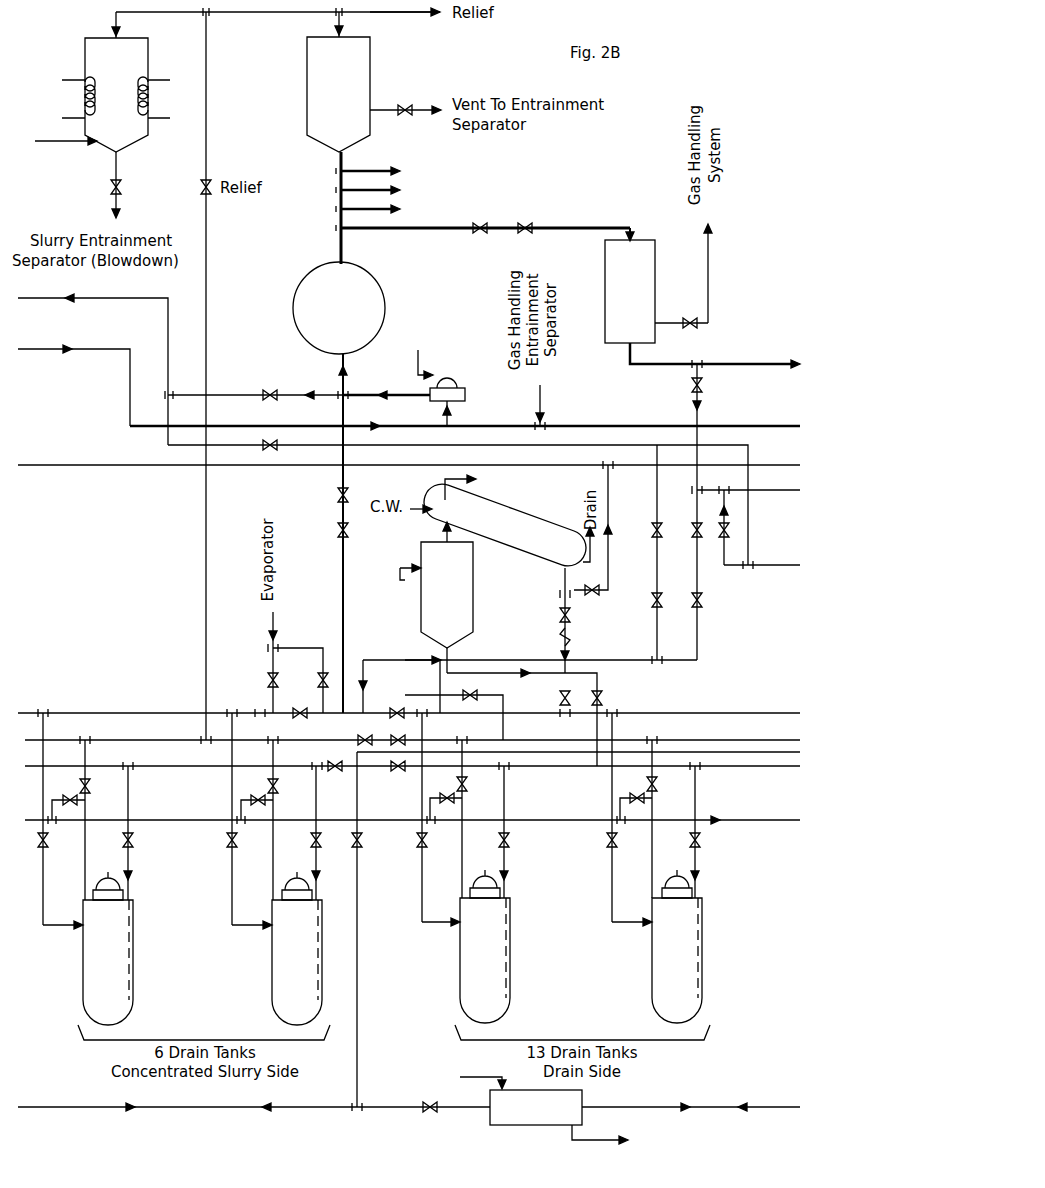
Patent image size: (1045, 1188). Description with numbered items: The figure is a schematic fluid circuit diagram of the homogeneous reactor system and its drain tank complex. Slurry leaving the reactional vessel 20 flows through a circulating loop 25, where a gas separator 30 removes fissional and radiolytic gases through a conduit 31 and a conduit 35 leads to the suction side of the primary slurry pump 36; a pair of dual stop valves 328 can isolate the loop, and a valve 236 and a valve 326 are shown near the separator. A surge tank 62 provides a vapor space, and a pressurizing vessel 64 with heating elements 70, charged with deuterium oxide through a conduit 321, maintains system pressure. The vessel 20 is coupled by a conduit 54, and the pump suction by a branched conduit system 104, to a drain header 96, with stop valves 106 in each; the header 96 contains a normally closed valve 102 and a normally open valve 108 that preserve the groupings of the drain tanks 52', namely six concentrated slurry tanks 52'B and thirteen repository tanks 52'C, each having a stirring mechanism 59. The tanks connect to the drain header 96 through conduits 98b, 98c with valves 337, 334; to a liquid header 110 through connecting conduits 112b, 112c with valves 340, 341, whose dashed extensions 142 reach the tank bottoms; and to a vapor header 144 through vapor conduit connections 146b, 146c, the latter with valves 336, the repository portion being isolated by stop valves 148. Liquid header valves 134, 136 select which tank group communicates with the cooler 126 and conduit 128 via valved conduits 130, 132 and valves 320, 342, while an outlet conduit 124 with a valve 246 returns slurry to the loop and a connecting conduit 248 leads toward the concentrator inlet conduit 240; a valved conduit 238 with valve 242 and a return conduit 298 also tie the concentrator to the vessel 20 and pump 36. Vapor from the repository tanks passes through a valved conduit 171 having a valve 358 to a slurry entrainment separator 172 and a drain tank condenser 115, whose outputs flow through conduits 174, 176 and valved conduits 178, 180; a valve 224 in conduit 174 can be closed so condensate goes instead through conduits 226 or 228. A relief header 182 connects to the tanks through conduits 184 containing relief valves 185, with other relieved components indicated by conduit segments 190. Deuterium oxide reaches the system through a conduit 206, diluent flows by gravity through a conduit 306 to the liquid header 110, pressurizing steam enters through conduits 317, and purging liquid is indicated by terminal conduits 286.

The reactional vessel 20 is at (310, 272).
The circulating loop 25 is at (384, 171).
The gas separator 30 is at (657, 274).
The conduit 31 is at (710, 268).
The conduit 35 is at (770, 426).
The primary slurry pump 36 is at (455, 382).
The conduit 54 is at (338, 480).
The stirring mechanism 59 is at (108, 874).
The surge tank 62 is at (370, 70).
The pressurizing vessel 64 is at (148, 70).
The heating elements 70 is at (78, 80).
The drain header 96 is at (100, 713).
The drain tank inlet conduit 98b is at (45, 738).
The drain tank inlet conduit 98c is at (423, 738).
The valve 102 is at (289, 686).
The branched conduit system 104 is at (702, 373).
The stop valves 106 is at (338, 528).
The valve 108 is at (400, 700).
The liquid header 110 is at (30, 770).
The connecting conduit 112b is at (130, 812).
The connecting conduit 112c is at (504, 808).
The drain tank condenser 115 is at (514, 510).
The valved conduit 124 is at (786, 565).
The cooler 126 is at (542, 1126).
The conduit 128 is at (480, 1107).
The valved conduit 130 is at (360, 992).
The valved conduit 132 is at (35, 1107).
The valve 134 is at (330, 762).
The valve 136 is at (398, 772).
The conduit extensions 142 is at (130, 952).
The vapor header 144 is at (28, 740).
The vapor conduit connection 146b is at (83, 880).
The vapor conduit connection 146c is at (460, 876).
The stop valves 148 is at (370, 724).
The valved conduit 171 is at (405, 660).
The slurry entrainment separator 172 is at (475, 590).
The conduit 174 is at (563, 582).
The conduit 176 is at (447, 676).
The valved conduit 178 is at (562, 706).
The valved conduit 180 is at (606, 738).
The relief header 182 is at (30, 820).
The conduits 184 is at (85, 797).
The relief valves 185 is at (347, 820).
The conduit segments 190 is at (378, 12).
The conduit 206 is at (698, 490).
The valve 224 is at (570, 616).
The conduit 226 is at (40, 465).
The conduit 228 is at (760, 465).
The valve 236 is at (690, 386).
The valved conduit 238 is at (236, 395).
The valved conduit 240 is at (40, 298).
The valve 242 is at (283, 384).
The valve 246 is at (720, 555).
The valved connecting conduit 248 is at (168, 442).
The terminal conduits 286 is at (418, 364).
The valved conduit 298 is at (40, 349).
The conduit 306 is at (762, 760).
The conduit 317 is at (282, 650).
The valve 320 is at (360, 846).
The conduit 321 is at (60, 141).
The valve 326 is at (693, 321).
The dual stop valves 328 is at (508, 228).
The valve 334 is at (418, 842).
The valve 336 is at (466, 784).
The valve 337 is at (46, 838).
The valve 340 is at (130, 850).
The valve 341 is at (509, 842).
The valve 342 is at (428, 1103).
The valve 358 is at (475, 690).
The drain tanks 52' is at (343, 987).
The concentrated slurry tanks 52'B is at (177, 962).
The slurry repository tanks 52'C is at (557, 960).